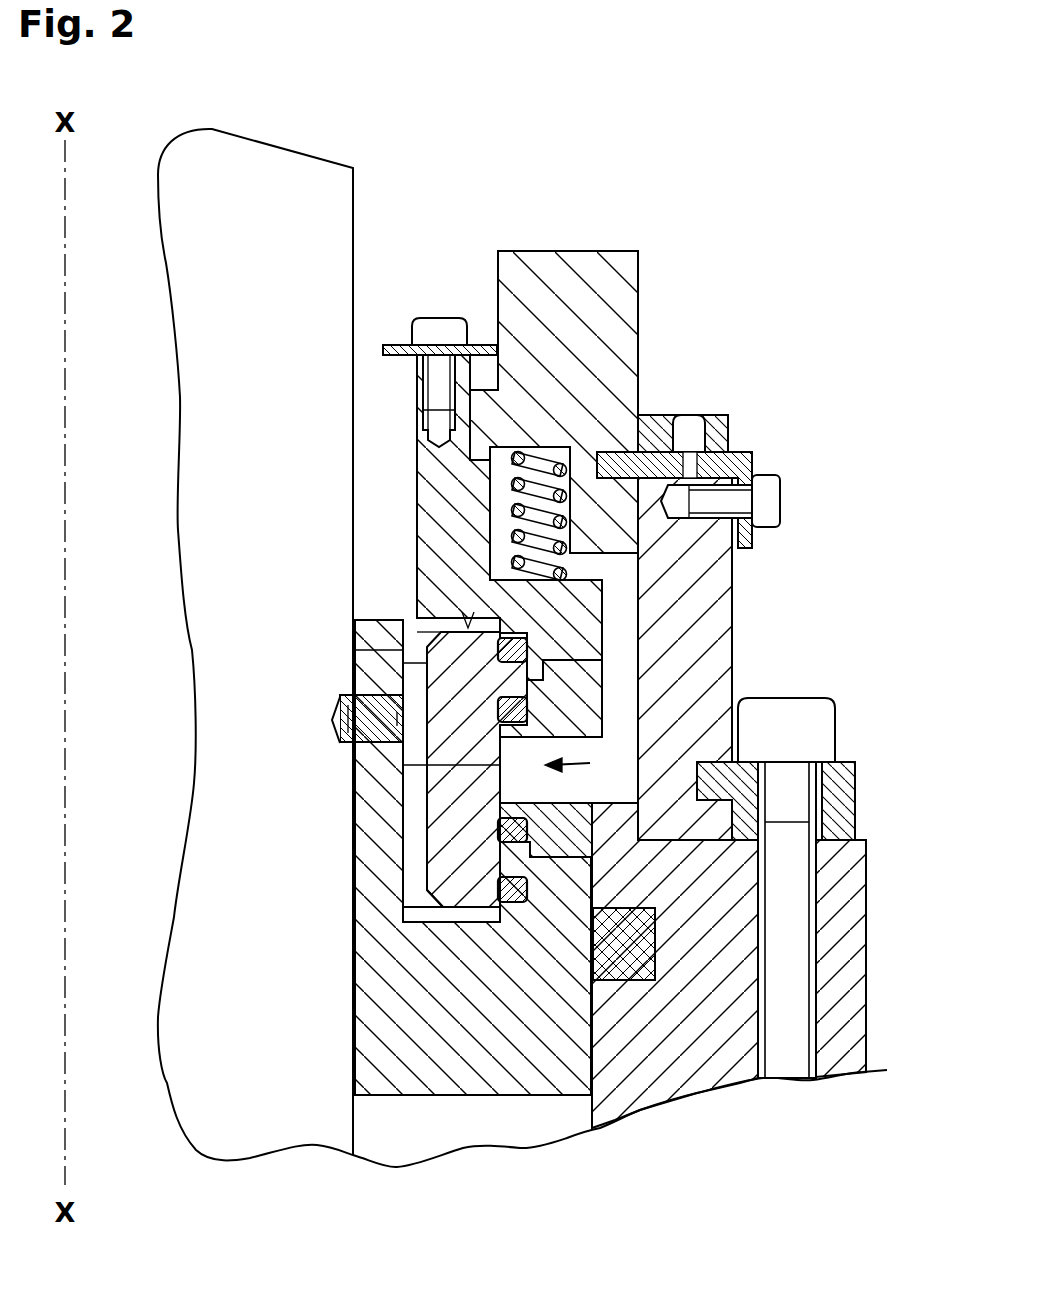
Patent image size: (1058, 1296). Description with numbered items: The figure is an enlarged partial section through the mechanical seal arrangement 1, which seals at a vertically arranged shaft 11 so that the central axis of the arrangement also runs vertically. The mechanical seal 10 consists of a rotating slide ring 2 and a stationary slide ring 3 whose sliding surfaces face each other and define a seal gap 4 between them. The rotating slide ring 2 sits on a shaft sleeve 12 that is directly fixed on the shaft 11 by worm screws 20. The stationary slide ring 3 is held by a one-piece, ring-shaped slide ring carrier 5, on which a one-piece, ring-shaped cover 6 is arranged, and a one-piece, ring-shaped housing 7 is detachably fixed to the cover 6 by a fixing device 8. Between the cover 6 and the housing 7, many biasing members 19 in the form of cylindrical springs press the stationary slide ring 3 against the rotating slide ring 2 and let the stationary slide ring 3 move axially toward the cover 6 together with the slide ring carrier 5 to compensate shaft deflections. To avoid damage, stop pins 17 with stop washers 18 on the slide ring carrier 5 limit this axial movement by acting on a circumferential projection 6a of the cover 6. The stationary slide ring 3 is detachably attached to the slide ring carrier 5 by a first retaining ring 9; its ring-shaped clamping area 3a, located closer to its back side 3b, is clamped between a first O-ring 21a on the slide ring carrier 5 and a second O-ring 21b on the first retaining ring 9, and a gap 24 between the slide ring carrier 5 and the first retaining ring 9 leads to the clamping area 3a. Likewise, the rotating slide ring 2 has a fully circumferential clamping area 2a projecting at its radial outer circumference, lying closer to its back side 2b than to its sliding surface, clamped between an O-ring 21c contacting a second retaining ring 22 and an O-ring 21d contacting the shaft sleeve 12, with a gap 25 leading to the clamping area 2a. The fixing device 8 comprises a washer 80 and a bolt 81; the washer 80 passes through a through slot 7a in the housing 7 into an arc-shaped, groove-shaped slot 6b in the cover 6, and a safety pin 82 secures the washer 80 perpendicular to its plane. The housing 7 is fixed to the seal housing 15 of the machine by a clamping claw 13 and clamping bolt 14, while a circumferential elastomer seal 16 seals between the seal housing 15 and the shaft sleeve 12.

The mechanical seal arrangement 1 is at (721, 203).
The rotating slide ring 2 is at (460, 880).
The clamping area of the rotating slide ring 2a is at (560, 880).
The back side of the rotating slide ring 2b is at (470, 920).
The stationary slide ring 3 is at (455, 690).
The clamping area of the stationary slide ring 3a is at (545, 688).
The back side of the stationary slide ring 3b is at (570, 630).
The seal gap 4 is at (470, 775).
The slide ring carrier 5 is at (430, 500).
The cover 6 is at (558, 280).
The circumferential projection 6a is at (485, 420).
The groove-shaped slot 6b is at (560, 492).
The housing 7 is at (695, 592).
The through slot 7a is at (665, 492).
The fixing device 8 is at (765, 461).
The first retaining ring 9 is at (573, 703).
The mechanical seal 10 is at (590, 763).
The shaft 11 is at (296, 187).
The shaft sleeve 12 is at (430, 1015).
The clamping claw 13 is at (835, 805).
The clamping bolt 14 is at (820, 748).
The seal housing 15 is at (840, 960).
The elastomer seal 16 is at (627, 957).
The stop pin 17 is at (428, 325).
The stop washer 18 is at (480, 345).
The biasing member 19 is at (520, 545).
The worm screw 20 is at (360, 720).
The first O-ring 21a is at (505, 652).
The second O-ring 21b is at (505, 710).
The O-ring 21c is at (505, 830).
The O-ring 21d is at (515, 900).
The second retaining ring 22 is at (573, 820).
The gap 24 is at (465, 612).
The gap 25 is at (583, 890).
The washer 80 is at (648, 432).
The bolt 81 is at (765, 507).
The safety pin 82 is at (690, 430).